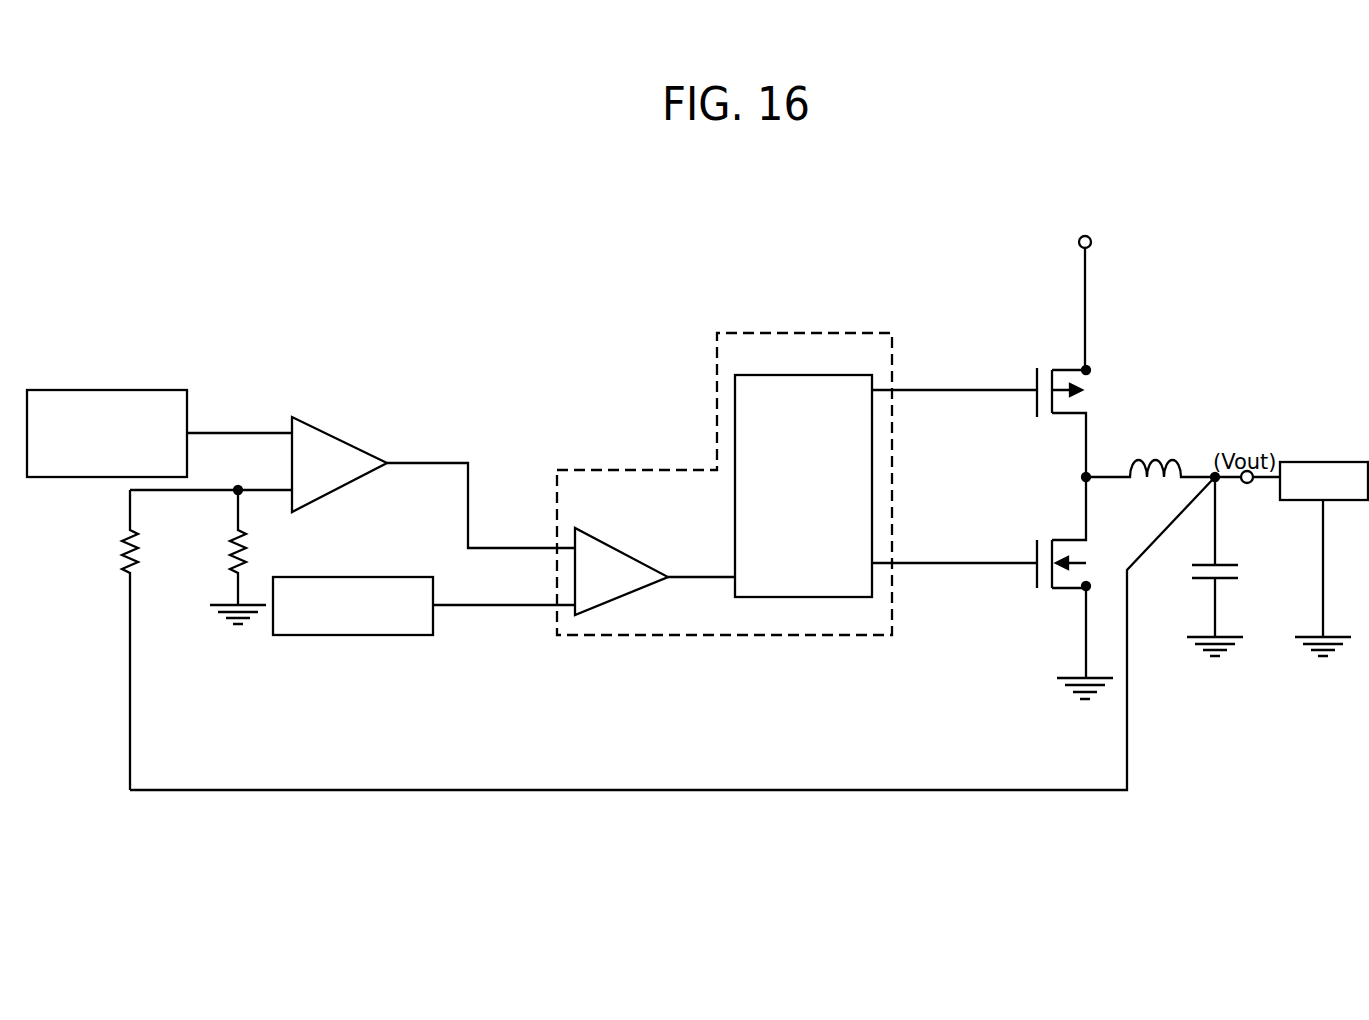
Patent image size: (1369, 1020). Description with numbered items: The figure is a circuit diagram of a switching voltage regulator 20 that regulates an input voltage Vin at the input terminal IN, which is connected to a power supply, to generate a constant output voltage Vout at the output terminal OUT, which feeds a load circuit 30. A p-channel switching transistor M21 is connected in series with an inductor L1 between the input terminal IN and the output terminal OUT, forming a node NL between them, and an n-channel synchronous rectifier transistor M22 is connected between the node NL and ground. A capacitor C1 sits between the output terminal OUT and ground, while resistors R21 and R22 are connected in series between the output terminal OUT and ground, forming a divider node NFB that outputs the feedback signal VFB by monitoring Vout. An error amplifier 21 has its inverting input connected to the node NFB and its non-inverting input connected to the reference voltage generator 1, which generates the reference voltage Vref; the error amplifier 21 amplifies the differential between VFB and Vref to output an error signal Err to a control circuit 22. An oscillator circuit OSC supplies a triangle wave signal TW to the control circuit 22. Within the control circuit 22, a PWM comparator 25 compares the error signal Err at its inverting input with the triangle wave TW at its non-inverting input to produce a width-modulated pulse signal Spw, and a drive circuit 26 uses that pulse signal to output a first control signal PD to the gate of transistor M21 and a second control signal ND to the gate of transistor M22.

The reference voltage generator 1 is at (137, 390).
The voltage regulator 20 is at (655, 230).
The error amplifier 21 is at (348, 489).
The control circuit 22 is at (893, 487).
The pulse width modulation (PWM) comparator 25 is at (640, 592).
The drive circuit 26 is at (818, 375).
The load circuit 30 is at (1335, 462).
The resistor R21 is at (155, 640).
The resistor R22 is at (254, 557).
The switching transistor M21 is at (1063, 411).
The synchronous rectifier transistor M22 is at (1074, 588).
The inductor L1 is at (1150, 456).
The capacitor C1 is at (1201, 566).
The divider node NFB is at (234, 493).
The node NL is at (1088, 475).
The input terminal IN is at (1092, 246).
The output terminal OUT is at (1247, 484).
The oscillator circuit OSC is at (360, 635).